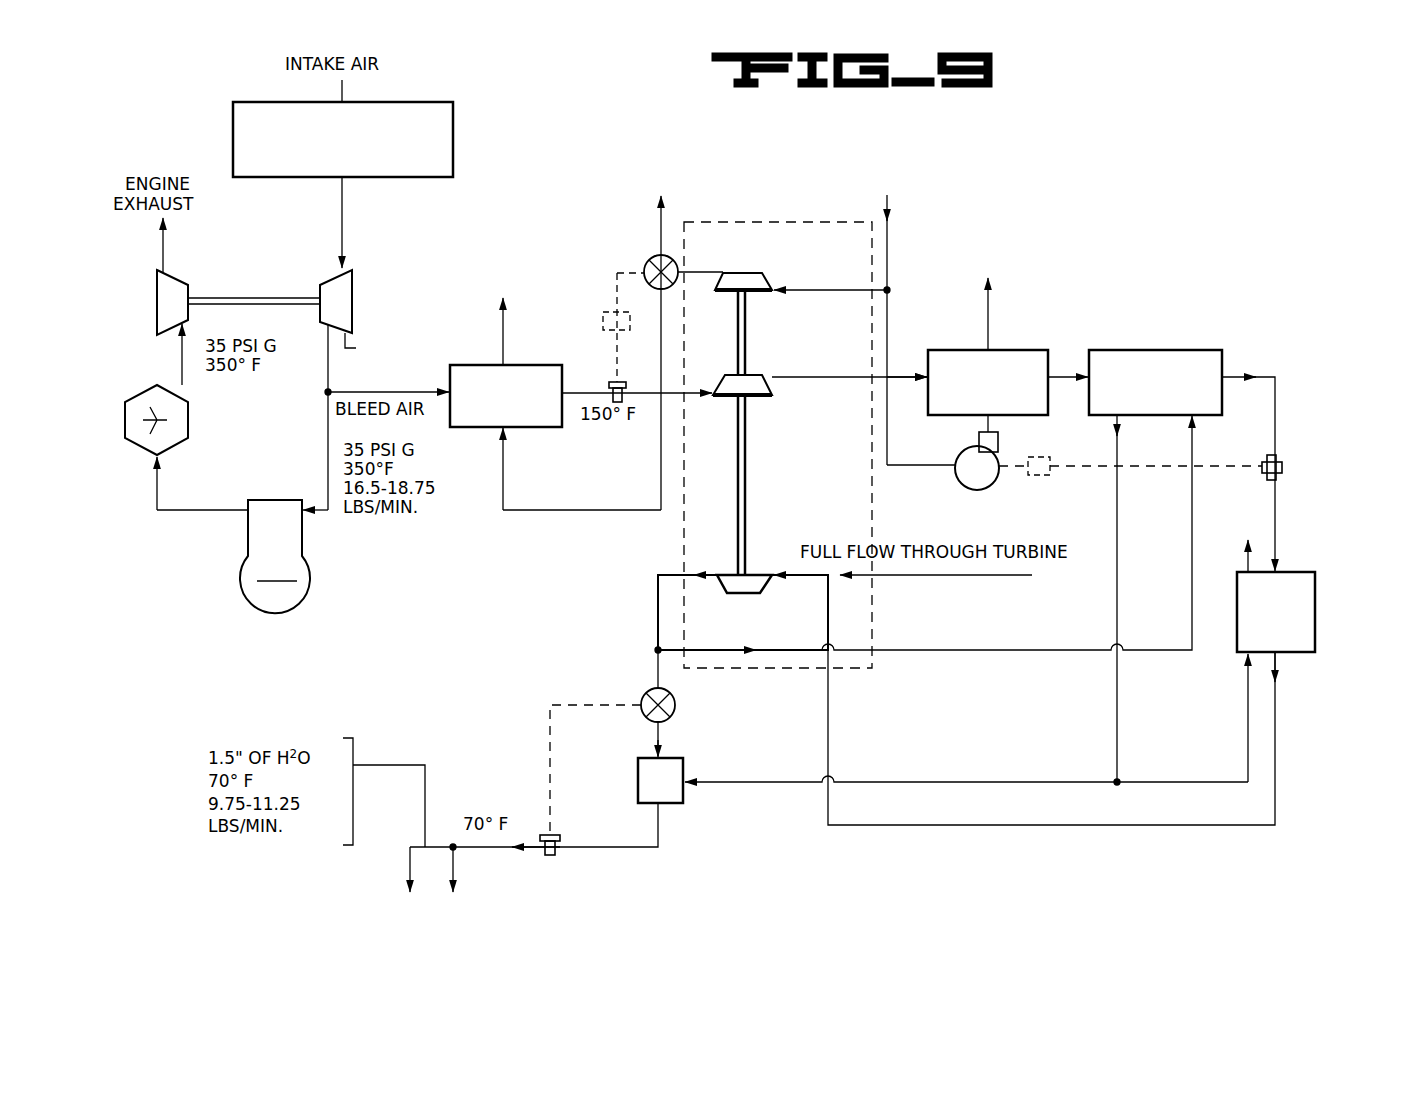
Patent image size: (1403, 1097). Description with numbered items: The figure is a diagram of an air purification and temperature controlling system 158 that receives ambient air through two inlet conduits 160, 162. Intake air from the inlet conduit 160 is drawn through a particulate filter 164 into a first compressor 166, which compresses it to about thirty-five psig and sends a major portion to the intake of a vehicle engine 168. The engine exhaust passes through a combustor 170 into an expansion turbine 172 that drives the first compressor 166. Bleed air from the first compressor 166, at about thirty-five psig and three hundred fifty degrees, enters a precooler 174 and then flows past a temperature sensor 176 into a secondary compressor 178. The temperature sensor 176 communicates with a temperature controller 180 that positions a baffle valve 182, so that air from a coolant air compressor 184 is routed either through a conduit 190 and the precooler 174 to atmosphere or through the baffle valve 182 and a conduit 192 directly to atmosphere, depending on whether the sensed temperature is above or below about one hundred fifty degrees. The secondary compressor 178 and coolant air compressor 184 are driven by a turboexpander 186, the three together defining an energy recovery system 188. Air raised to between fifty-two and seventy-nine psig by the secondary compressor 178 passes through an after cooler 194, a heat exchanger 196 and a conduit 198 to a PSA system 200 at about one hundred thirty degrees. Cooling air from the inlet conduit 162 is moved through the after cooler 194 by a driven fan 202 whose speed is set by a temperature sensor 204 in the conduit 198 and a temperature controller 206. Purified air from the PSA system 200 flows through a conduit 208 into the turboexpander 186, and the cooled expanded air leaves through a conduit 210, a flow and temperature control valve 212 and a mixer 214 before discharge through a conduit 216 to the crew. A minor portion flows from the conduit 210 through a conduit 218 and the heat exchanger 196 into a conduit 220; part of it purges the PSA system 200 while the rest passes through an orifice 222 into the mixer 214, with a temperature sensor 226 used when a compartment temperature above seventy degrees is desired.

The air purification and temperature controlling system 158 is at (988, 189).
The inlet conduit 160 is at (342, 86).
The inlet conduit 162 is at (887, 228).
The particulate filter 164 is at (447, 133).
The first compressor 166 is at (350, 276).
The vehicle engine 168 is at (269, 583).
The combustor 170 is at (190, 424).
The expansion turbine 172 is at (177, 277).
The precooler 174 is at (520, 365).
The temperature sensor 176 is at (609, 384).
The secondary compressor 178 is at (727, 396).
The temperature controller 180 is at (603, 316).
The baffle valve 182 is at (646, 264).
The coolant air compressor 184 is at (765, 277).
The turboexpander 186 is at (750, 577).
The energy recovery system 188 is at (797, 222).
The conduit 190 is at (662, 306).
The conduit 192 is at (660, 223).
The after cooler 194 is at (938, 352).
The heat exchanger 196 is at (1105, 352).
The conduit 198 is at (1288, 360).
The PSA system 200 is at (1240, 636).
The driven fan 202 is at (961, 479).
The temperature sensor 204 is at (1262, 468).
The temperature controller 206 is at (1036, 477).
The conduit 208 is at (1036, 825).
The conduit 210 is at (658, 601).
The flow and temperature control valve 212 is at (643, 695).
The mixer 214 is at (683, 797).
The conduit 216 is at (660, 850).
The conduit 218 is at (897, 652).
The conduit 220 is at (1083, 727).
The orifice 222 is at (1062, 768).
The temperature sensor 226 is at (582, 825).